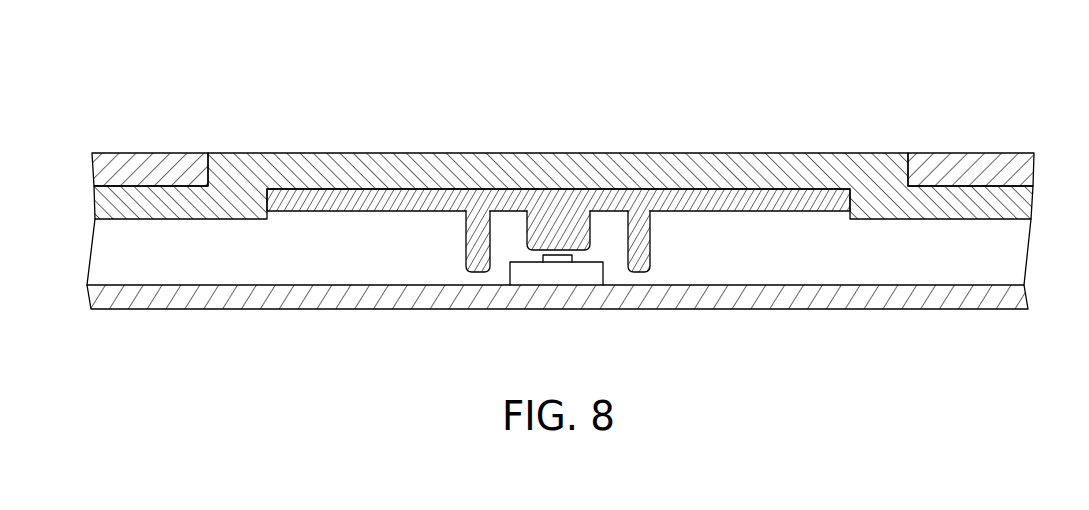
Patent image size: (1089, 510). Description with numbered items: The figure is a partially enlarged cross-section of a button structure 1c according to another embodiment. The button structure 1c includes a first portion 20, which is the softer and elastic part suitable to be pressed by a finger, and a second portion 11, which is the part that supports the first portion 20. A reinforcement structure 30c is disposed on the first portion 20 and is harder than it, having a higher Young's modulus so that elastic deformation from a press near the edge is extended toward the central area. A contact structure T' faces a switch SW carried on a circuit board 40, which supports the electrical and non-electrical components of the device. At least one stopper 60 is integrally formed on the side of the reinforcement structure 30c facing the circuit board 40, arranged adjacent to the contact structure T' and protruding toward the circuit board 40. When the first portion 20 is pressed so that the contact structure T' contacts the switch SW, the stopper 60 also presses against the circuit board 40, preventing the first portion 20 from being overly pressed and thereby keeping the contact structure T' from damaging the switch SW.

The button structure 1c is at (552, 202).
The second portion 11 is at (998, 150).
The first portion 20 is at (808, 142).
The reinforcement structure 30c is at (561, 276).
The contact structure T' is at (526, 287).
The switch SW is at (570, 272).
The stopper 60 is at (647, 250).
The circuit board 40 is at (835, 303).